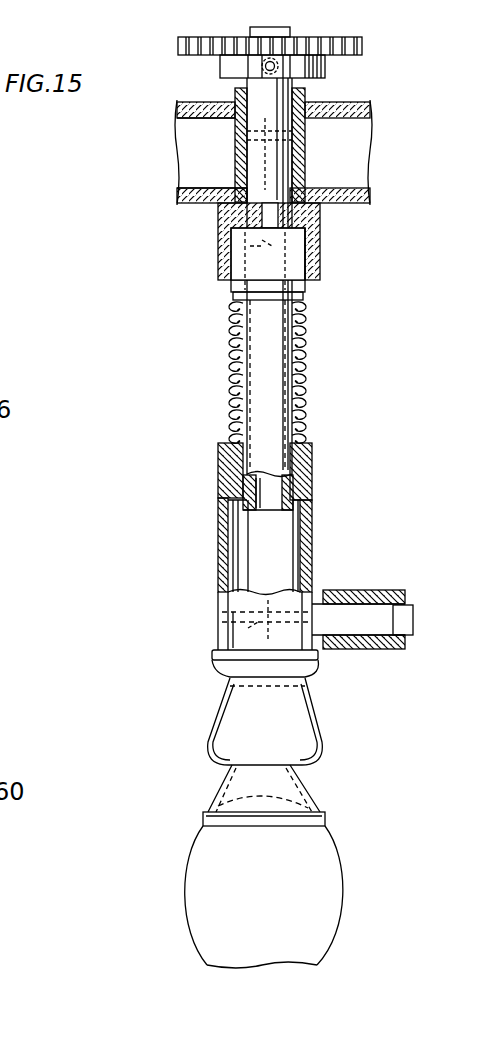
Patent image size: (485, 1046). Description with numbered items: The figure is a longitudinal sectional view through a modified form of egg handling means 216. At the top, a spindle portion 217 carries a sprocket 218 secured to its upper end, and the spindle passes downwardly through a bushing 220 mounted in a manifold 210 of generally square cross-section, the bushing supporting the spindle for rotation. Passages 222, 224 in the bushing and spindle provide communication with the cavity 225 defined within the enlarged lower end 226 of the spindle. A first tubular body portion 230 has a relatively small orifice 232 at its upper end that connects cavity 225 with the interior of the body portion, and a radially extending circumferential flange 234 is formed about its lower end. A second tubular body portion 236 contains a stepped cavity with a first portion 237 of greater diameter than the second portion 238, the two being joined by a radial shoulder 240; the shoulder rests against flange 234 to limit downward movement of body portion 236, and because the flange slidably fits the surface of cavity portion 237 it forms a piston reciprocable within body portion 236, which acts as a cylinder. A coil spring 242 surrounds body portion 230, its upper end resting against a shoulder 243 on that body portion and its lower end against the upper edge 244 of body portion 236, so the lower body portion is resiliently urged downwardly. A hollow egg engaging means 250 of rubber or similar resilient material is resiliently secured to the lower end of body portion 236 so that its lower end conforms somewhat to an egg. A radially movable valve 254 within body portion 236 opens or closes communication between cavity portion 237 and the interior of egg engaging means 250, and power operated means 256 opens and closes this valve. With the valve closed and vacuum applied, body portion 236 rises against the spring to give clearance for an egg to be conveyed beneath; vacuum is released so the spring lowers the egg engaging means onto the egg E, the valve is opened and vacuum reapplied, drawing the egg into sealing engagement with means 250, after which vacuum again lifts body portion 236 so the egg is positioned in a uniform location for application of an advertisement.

The manifold 210 is at (365, 182).
The egg handling means 216 is at (378, 320).
The spindle portion 217 is at (250, 32).
The sprocket 218 is at (362, 49).
The bushing 220 is at (305, 165).
The passage 222 is at (235, 140).
The passage 224 is at (308, 150).
The cavity 225 is at (300, 240).
The enlarged lower end 226 is at (320, 268).
The first tubular body portion 230 is at (305, 362).
The orifice 232 is at (218, 243).
The circumferential flange 234 is at (300, 503).
The second tubular body portion 236 is at (218, 572).
The first cavity portion 237 is at (296, 551).
The second cavity portion 238 is at (282, 460).
The radial shoulder 240 is at (226, 526).
The coil spring 242 is at (232, 378).
The shoulder 243 is at (232, 295).
The upper edge 244 is at (305, 440).
The egg engaging means 250 is at (322, 722).
The valve 254 is at (218, 638).
The power operated means 256 is at (395, 590).
The egg E is at (342, 905).